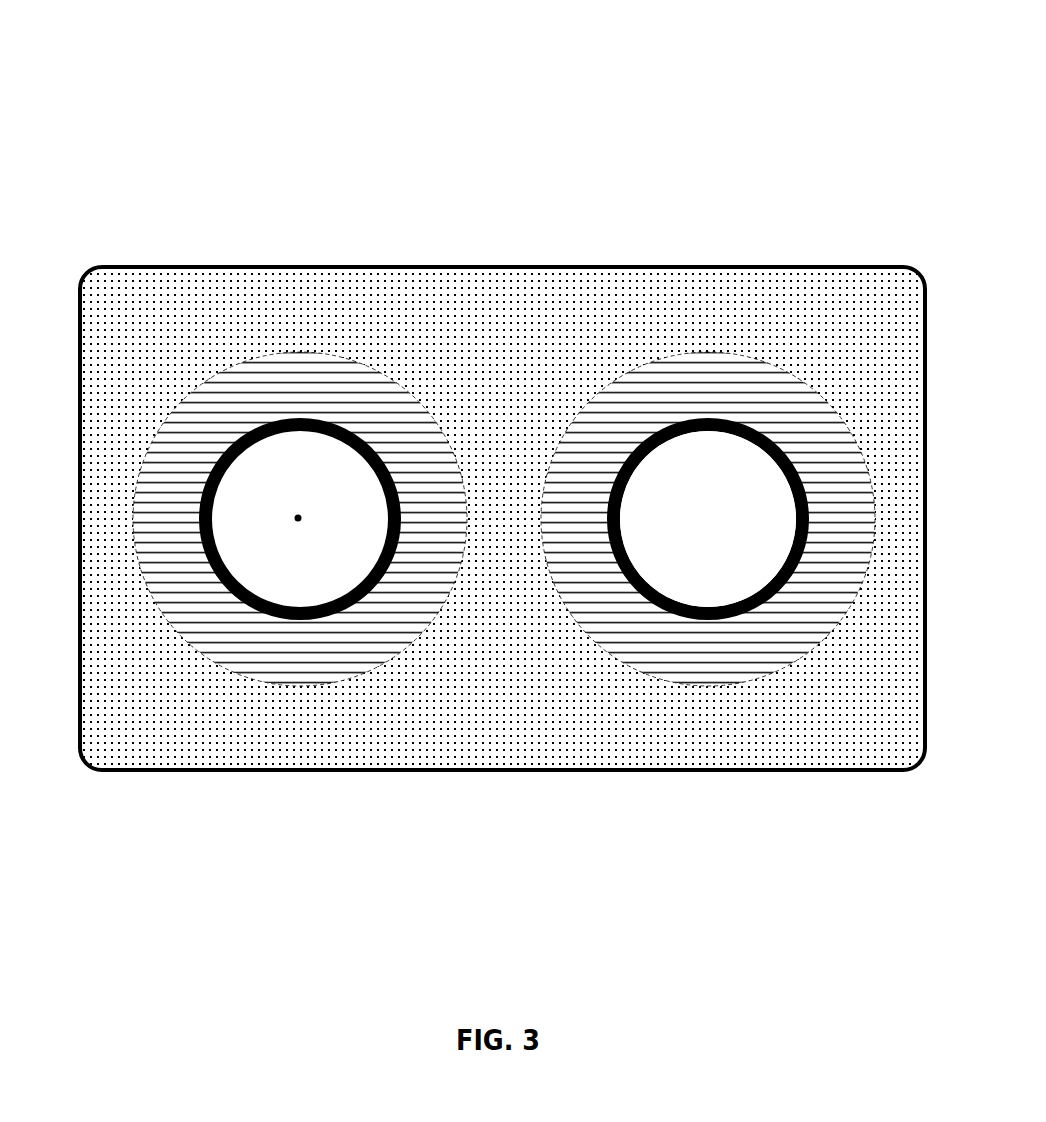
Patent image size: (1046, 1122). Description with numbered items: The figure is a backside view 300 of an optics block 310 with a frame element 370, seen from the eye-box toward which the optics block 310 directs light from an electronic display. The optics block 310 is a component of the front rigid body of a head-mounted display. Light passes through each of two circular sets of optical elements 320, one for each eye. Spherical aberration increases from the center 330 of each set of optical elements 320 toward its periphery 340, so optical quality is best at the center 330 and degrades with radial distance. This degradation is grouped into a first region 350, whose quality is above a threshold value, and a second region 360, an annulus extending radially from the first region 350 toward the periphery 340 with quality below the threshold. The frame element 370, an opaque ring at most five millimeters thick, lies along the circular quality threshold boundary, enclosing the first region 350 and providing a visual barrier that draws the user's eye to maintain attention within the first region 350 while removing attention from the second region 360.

The backside view 300 is at (487, 72).
The optics block 310 is at (315, 772).
The set of optical elements 320 is at (135, 307).
The center 330 is at (298, 518).
The periphery 340 is at (300, 353).
The first region 350 is at (707, 518).
The second region 360 is at (768, 625).
The frame element 370 is at (680, 617).